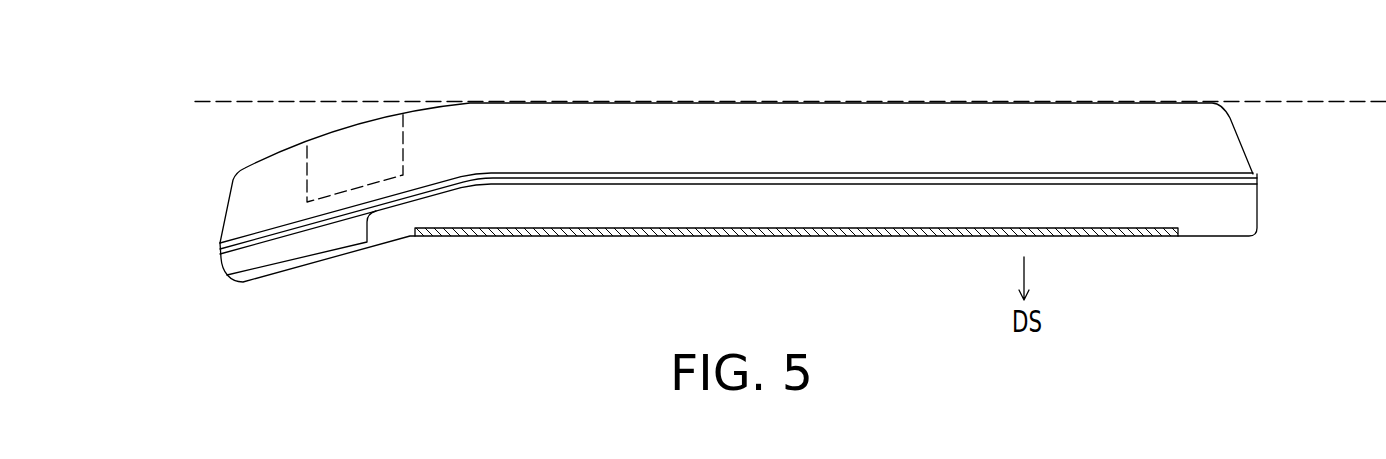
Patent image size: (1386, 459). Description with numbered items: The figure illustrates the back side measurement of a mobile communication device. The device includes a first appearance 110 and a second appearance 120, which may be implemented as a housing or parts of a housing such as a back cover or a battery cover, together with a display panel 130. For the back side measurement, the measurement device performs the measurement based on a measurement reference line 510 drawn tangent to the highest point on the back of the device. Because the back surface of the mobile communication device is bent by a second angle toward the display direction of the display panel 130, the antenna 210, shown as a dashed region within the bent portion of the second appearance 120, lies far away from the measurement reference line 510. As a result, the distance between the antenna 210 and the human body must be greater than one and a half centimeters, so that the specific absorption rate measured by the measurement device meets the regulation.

The first appearance 110 is at (1245, 205).
The second appearance 120 is at (1212, 149).
The display panel 130 is at (1087, 237).
The antenna 210 is at (323, 165).
The measurement reference line 510 is at (1247, 102).